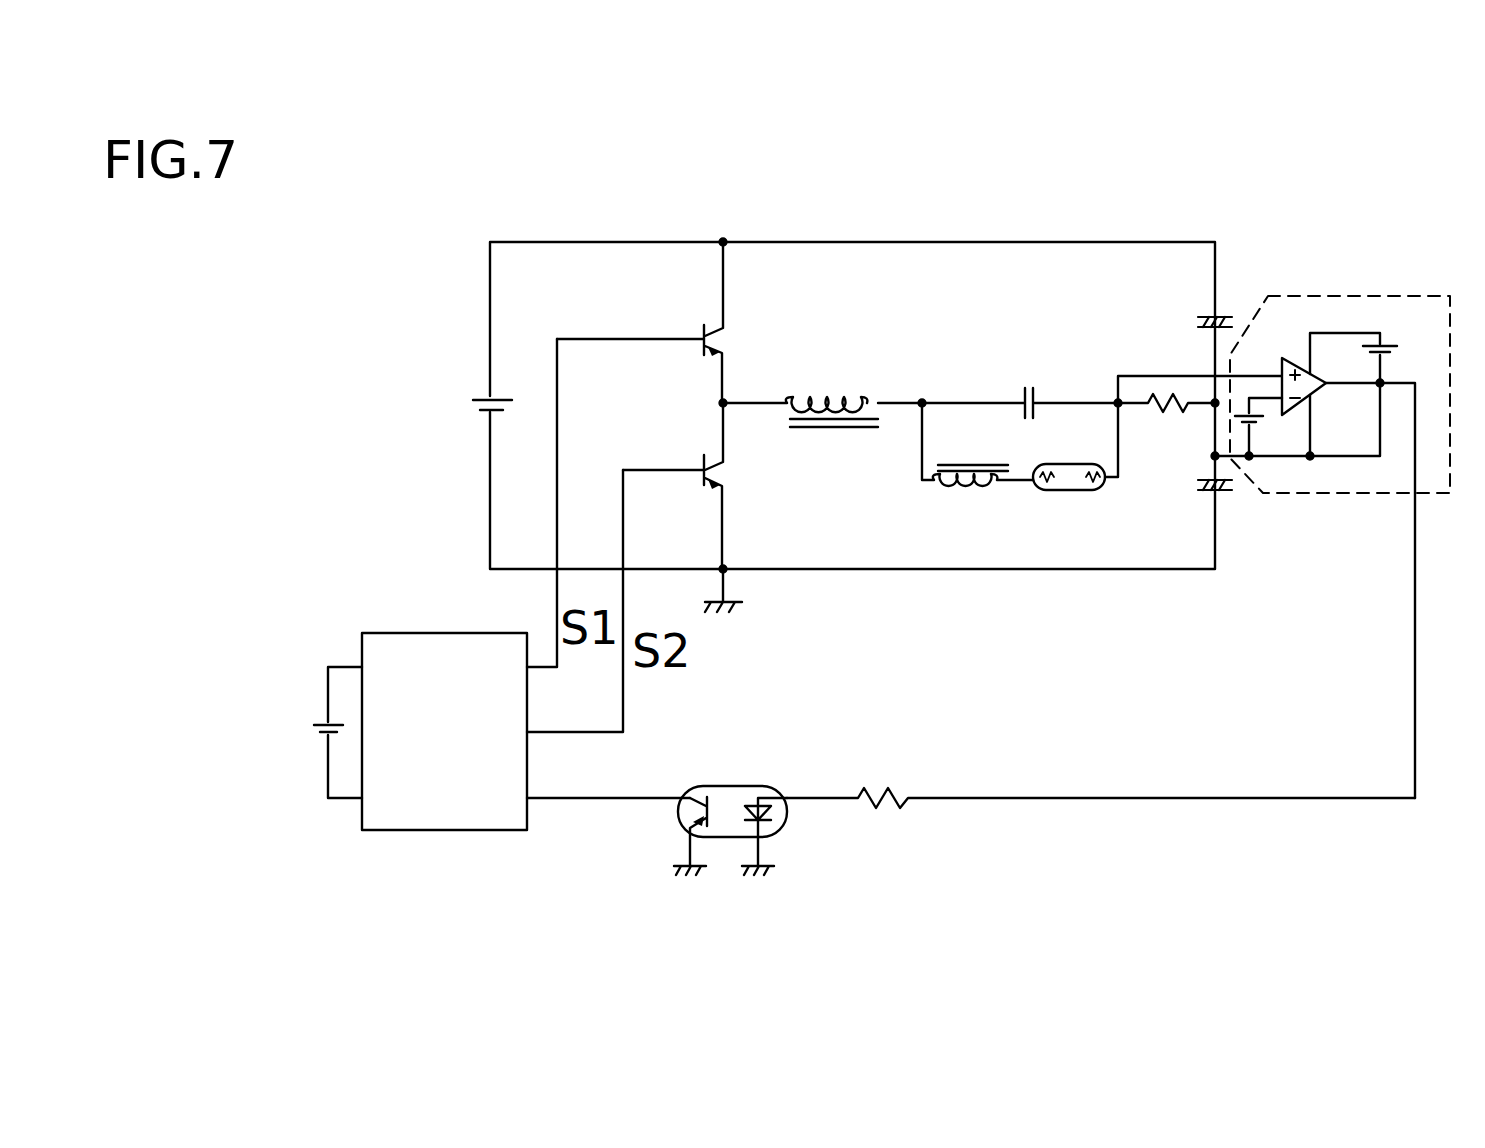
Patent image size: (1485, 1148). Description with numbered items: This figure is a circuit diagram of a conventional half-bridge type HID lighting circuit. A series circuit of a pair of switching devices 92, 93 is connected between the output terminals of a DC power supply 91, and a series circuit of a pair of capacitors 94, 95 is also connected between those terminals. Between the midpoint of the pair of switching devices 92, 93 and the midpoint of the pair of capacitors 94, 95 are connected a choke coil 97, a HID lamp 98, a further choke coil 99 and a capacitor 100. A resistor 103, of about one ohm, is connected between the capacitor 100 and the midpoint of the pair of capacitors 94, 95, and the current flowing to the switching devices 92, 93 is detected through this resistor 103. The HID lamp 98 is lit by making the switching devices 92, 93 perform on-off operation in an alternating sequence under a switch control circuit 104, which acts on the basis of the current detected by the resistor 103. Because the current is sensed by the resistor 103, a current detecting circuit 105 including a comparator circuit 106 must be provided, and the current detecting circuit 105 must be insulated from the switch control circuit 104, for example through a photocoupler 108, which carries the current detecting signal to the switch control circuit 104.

The DC power supply 91 is at (483, 397).
The switching device 92 is at (702, 335).
The switching device 93 is at (702, 467).
The capacitor 94 is at (1221, 317).
The capacitor 95 is at (1222, 500).
The choke coil 97 is at (829, 396).
The HID lamp 98 is at (1067, 493).
The choke coil 99 is at (963, 488).
The capacitor 100 is at (1038, 396).
The resistor 103 is at (1166, 412).
The switch control circuit 104 is at (396, 630).
The current detecting circuit 105 is at (1392, 292).
The comparator circuit 106 is at (1290, 355).
The photocoupler 108 is at (738, 784).